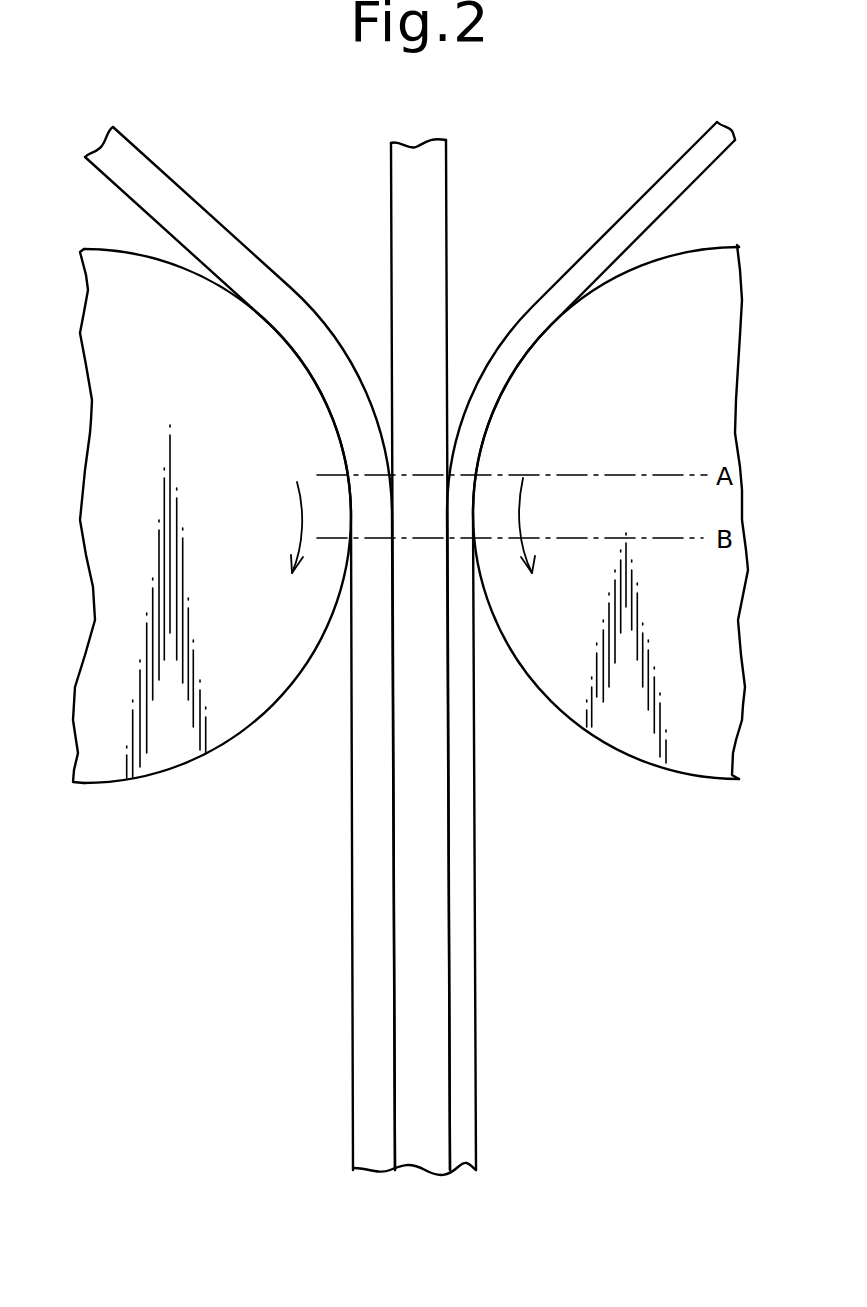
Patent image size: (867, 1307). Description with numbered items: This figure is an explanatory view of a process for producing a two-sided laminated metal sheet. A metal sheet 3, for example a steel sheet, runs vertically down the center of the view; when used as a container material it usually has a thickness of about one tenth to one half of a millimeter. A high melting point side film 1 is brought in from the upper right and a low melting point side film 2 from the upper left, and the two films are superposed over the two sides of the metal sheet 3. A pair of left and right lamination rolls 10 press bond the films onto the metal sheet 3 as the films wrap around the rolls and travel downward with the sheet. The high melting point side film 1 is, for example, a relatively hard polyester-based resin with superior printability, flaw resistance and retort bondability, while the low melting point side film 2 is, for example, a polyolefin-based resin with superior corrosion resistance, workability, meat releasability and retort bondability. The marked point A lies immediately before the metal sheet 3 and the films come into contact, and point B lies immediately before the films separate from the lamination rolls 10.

The high melting point side film 1 is at (657, 193).
The low melting point side film 2 is at (158, 182).
The metal sheet 3 is at (446, 186).
The lamination rolls 10 is at (197, 740).